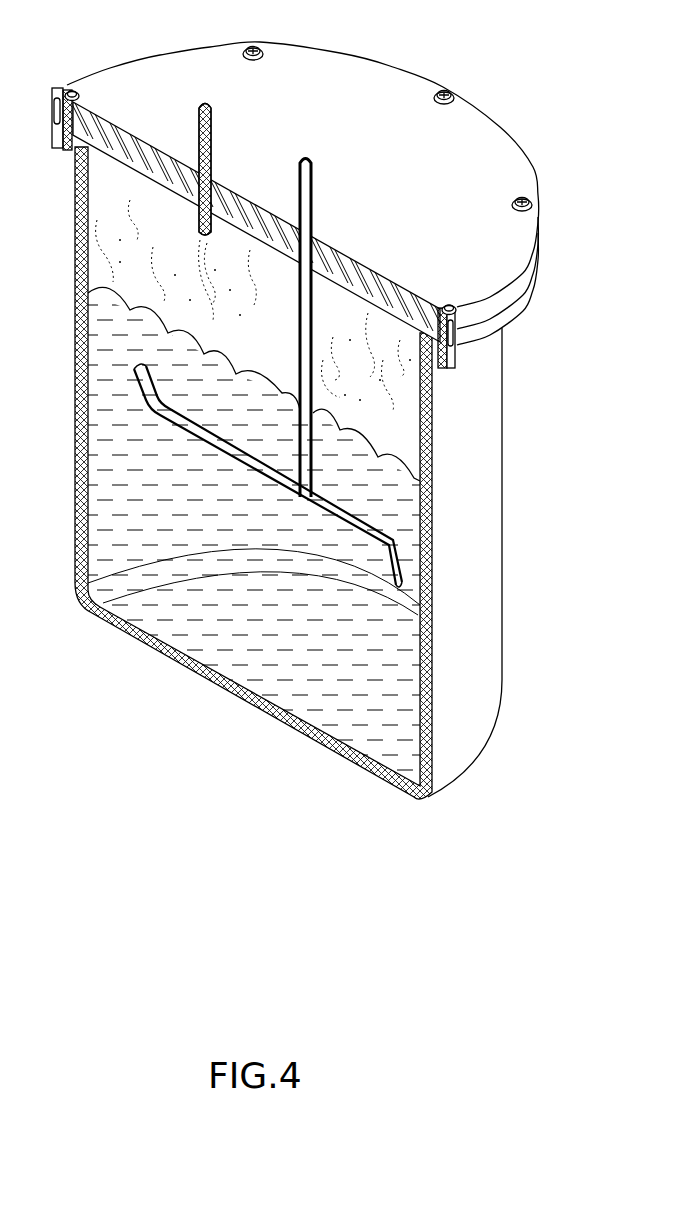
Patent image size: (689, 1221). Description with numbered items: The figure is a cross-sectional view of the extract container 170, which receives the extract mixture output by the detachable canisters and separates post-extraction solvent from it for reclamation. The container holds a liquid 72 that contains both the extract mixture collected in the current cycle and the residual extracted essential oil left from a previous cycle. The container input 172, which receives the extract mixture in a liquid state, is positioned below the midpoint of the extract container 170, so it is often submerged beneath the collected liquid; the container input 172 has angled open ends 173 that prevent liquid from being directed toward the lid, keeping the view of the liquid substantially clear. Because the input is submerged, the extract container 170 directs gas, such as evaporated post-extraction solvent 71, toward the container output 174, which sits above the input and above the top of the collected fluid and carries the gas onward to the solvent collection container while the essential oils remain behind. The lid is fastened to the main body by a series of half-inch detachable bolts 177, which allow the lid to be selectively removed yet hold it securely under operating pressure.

The extract container 170 is at (188, 75).
The bolts 177 is at (67, 85).
The container output 174 is at (198, 221).
The container input 172 is at (300, 365).
The angled open ends 173 is at (137, 366).
The evaporated post-extraction solvent 71 is at (412, 412).
The liquid 72 is at (398, 671).